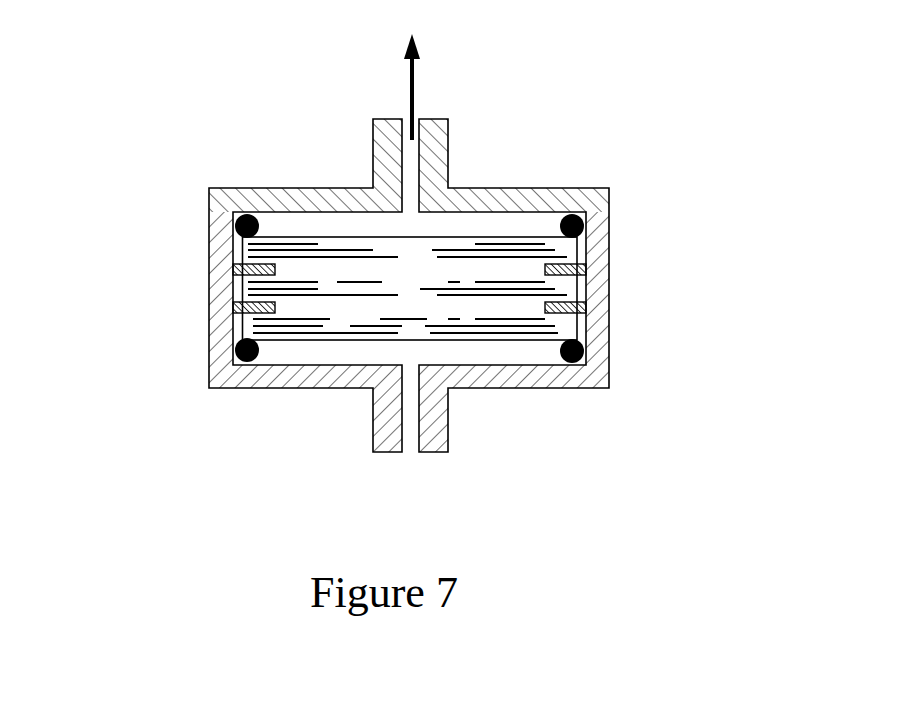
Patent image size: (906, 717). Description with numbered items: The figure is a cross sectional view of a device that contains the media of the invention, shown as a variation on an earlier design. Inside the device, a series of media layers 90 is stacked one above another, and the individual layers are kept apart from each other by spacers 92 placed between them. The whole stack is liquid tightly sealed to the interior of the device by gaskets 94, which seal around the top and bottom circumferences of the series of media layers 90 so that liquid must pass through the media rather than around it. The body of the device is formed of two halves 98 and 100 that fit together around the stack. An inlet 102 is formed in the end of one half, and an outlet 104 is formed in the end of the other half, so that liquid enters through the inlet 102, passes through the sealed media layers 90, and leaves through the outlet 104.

The media layers 90 is at (235, 325).
The spacers 92 is at (587, 270).
The gaskets 94 is at (571, 222).
The first half of the device 98 is at (520, 378).
The second half of the device 100 is at (468, 193).
The inlet 102 is at (408, 442).
The outlet 104 is at (413, 140).